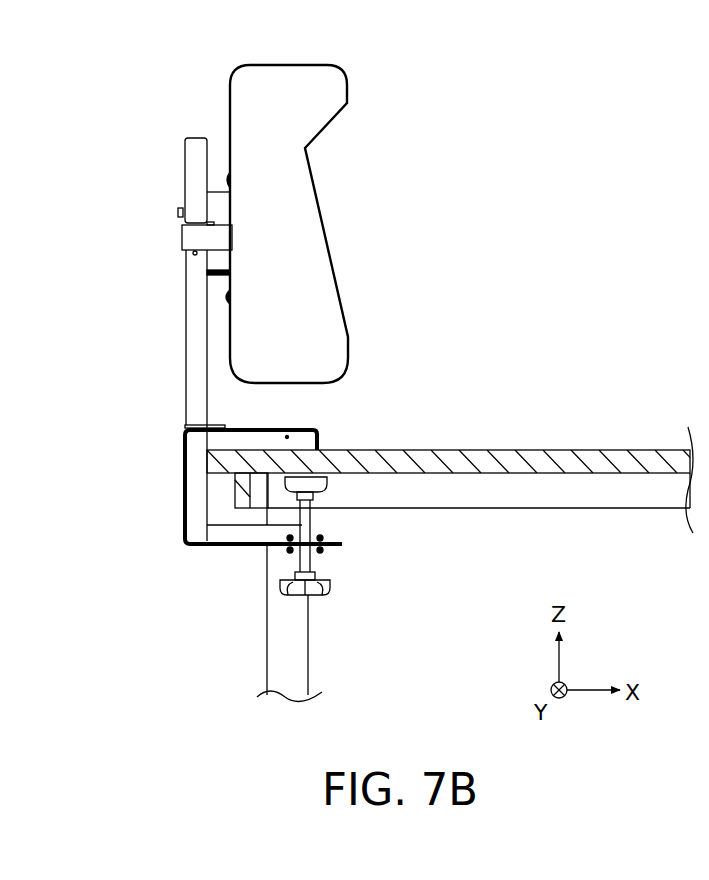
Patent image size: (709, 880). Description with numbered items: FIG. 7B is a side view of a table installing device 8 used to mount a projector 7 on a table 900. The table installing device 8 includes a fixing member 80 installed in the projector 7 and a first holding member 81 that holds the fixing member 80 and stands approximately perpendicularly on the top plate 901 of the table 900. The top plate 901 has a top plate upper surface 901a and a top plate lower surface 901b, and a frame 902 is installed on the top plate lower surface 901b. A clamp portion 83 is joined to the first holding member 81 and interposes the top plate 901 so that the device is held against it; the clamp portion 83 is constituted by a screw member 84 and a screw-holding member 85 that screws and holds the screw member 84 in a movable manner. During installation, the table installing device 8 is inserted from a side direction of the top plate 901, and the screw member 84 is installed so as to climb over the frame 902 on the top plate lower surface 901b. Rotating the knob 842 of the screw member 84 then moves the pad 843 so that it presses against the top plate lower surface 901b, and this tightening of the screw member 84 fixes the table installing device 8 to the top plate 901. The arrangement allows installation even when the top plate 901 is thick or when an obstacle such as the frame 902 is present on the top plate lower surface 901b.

The projector 7 is at (333, 82).
The table installing device 8 is at (142, 402).
The fixing member 80 is at (194, 236).
The first holding member 81 is at (186, 343).
The clamp portion 83 is at (216, 572).
The screw member 84 is at (391, 540).
The knob 842 is at (331, 586).
The pad 843 is at (328, 480).
The screw-holding member 85 is at (183, 528).
The table 900 is at (401, 423).
The top plate 901 is at (442, 477).
The top plate upper surface 901a is at (409, 450).
The top plate lower surface 901b is at (630, 475).
The frame 902 is at (234, 488).